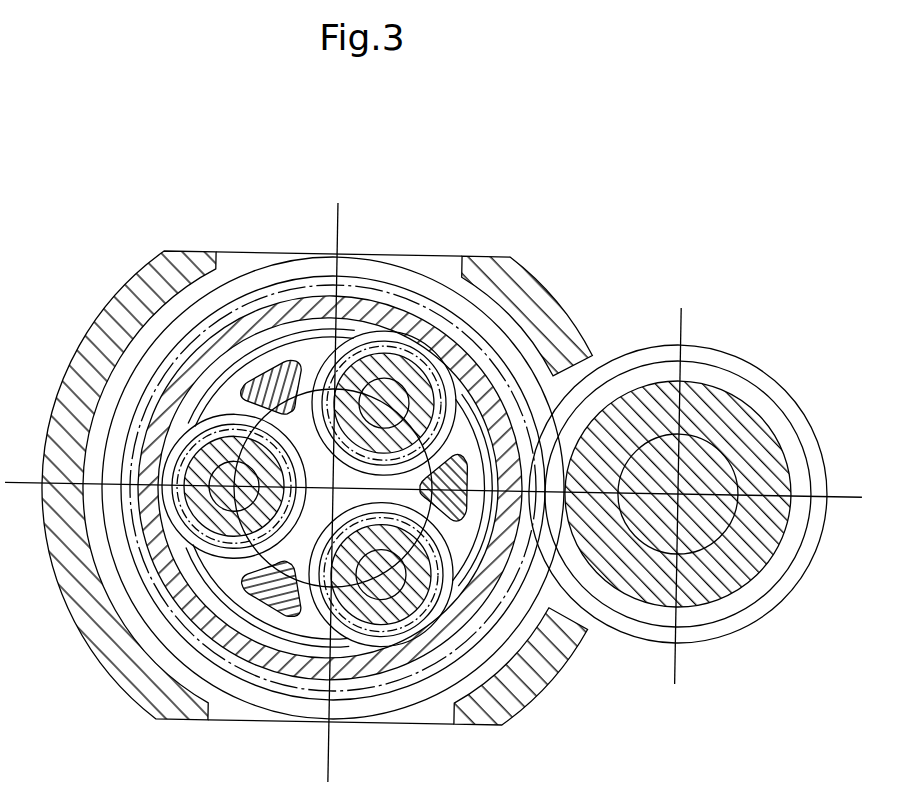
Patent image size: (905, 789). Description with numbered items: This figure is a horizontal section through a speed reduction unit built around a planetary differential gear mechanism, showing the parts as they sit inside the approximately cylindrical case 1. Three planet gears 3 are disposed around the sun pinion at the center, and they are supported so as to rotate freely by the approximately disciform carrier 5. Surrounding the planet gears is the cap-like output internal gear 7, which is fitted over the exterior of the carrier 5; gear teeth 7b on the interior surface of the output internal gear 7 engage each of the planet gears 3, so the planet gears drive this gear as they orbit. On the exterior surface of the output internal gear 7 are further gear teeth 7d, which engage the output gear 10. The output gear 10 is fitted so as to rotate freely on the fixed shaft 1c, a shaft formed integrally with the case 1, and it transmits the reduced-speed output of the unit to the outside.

The case 1 is at (540, 310).
The fixed shaft 1c is at (703, 452).
The planet gear 3 is at (360, 612).
The carrier 5 is at (386, 398).
The output internal gear 7 is at (300, 672).
The gear teeth 7b is at (267, 645).
The gear teeth 7d is at (427, 692).
The output gear 10 is at (648, 594).